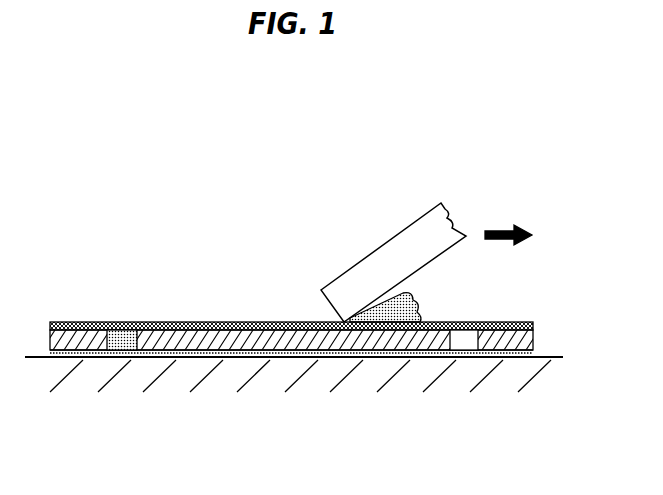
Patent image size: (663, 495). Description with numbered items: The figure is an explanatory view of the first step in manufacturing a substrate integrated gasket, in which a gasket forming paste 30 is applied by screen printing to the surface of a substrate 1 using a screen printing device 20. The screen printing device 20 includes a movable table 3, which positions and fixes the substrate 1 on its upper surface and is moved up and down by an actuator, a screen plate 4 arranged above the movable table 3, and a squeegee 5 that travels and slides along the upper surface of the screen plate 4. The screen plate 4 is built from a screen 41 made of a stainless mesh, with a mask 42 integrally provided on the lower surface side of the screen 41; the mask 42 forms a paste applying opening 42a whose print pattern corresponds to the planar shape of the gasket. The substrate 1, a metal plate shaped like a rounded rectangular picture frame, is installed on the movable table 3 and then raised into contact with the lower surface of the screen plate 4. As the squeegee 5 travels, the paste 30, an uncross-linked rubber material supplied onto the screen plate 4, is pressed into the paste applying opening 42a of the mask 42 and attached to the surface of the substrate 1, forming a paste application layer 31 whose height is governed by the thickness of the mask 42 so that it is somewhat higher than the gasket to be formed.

The substrate 1 is at (496, 364).
The movable table 3 is at (275, 388).
The screen plate 4 is at (225, 318).
The screen 41 is at (168, 321).
The mask 42 is at (267, 321).
The paste applying opening 42a is at (463, 343).
The paste application layer 31 is at (117, 356).
The squeegee 5 is at (420, 232).
The gasket forming paste 30 is at (420, 300).
The screen printing device 20 is at (327, 214).